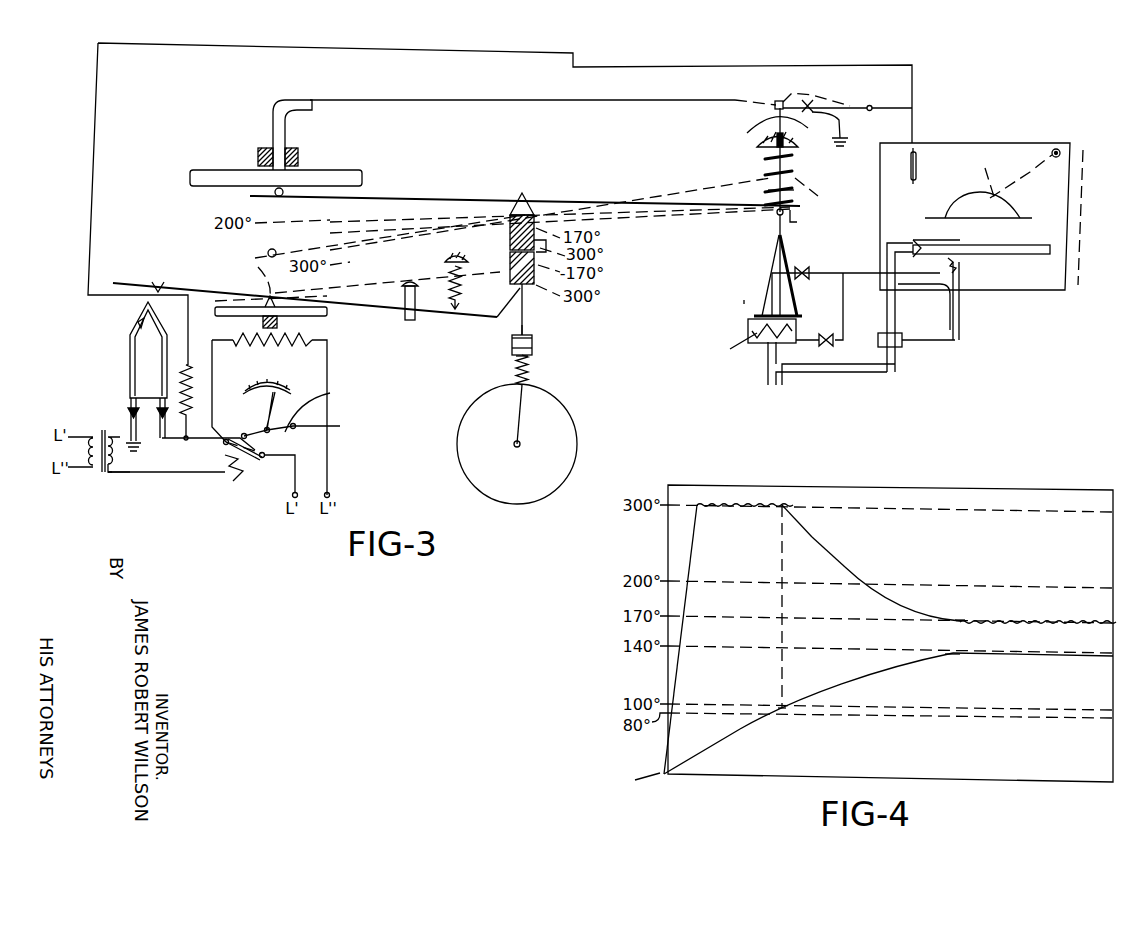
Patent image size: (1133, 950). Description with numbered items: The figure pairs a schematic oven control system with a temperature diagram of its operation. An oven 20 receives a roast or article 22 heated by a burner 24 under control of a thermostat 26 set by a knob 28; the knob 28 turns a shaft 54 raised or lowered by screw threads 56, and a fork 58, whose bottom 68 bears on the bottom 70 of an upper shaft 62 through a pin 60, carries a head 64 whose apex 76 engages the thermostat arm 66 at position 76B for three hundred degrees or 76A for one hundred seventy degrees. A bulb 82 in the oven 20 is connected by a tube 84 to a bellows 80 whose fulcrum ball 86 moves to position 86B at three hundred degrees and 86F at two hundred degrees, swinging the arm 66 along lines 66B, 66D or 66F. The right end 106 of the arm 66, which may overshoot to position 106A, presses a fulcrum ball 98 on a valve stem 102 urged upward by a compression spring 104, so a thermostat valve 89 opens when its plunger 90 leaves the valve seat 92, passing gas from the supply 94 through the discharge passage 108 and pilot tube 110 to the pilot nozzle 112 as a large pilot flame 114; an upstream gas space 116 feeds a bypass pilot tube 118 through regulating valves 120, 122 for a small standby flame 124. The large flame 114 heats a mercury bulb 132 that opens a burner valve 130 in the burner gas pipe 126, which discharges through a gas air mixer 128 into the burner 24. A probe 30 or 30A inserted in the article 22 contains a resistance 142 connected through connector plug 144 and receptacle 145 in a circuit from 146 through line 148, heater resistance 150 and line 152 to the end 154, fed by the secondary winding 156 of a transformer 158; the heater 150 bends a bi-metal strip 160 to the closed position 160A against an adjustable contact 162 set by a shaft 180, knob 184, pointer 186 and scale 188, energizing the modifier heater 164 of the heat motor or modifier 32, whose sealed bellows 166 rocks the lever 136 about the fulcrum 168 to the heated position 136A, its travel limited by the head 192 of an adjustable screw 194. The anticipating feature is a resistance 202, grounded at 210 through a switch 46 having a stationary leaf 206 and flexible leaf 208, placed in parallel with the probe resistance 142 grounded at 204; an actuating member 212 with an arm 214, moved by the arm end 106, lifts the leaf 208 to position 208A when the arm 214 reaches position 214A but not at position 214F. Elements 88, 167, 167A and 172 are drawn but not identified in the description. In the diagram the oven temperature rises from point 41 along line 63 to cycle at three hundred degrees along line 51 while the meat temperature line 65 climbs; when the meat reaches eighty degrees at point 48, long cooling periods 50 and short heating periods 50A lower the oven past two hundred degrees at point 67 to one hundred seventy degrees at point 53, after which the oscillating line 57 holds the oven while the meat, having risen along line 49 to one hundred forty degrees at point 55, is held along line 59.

In FIG. 3, the oven 20 is at (1005, 146).
In FIG. 3, the article 22 is at (1017, 215).
In FIG. 3, the burner 24 is at (1004, 254).
In FIG. 3, the thermostat 26 is at (225, 142).
In FIG. 3, the thermostatic knob 28 is at (572, 420).
In FIG. 3, the probe 30 is at (982, 184).
In FIG. 3, the probe 30A is at (130, 355).
In FIG. 3, the modifier 32 is at (336, 353).
In FIG. 4, the initial temperature point 41 is at (634, 783).
In FIG. 3, the switch 46 is at (841, 122).
In FIG. 4, the eighty degree point 48 is at (782, 708).
In FIG. 4, the meat temperature rise line 49 is at (808, 698).
In FIG. 4, the cooling periods 50 is at (806, 524).
In FIG. 4, the heating period 50A is at (820, 542).
In FIG. 4, the three hundred degree oscillating line 51 is at (734, 508).
In FIG. 4, the one hundred seventy degree point 53 is at (962, 620).
In FIG. 3, the shaft 54 is at (528, 384).
In FIG. 4, the one hundred forty degree point 55 is at (955, 657).
In FIG. 3, the screw thread construction 56 is at (530, 370).
In FIG. 4, the one hundred seventy degree oscillating line 57 is at (1030, 621).
In FIG. 3, the fork 58 is at (533, 344).
In FIG. 4, the meat holding line 59 is at (1042, 657).
In FIG. 3, the pin 60 is at (512, 338).
In FIG. 3, the upper shaft 62 is at (536, 326).
In FIG. 4, the oven heating line 63 is at (683, 640).
In FIG. 3, the thermostat arm engaging head 64 is at (535, 212).
In FIG. 4, the meat temperature line 65 is at (702, 775).
In FIG. 3, the thermostat arm 66 is at (390, 197).
In FIG. 3, the arm position 66B is at (387, 278).
In FIG. 3, the arm position 66D is at (420, 228).
In FIG. 3, the arm position 66F is at (370, 225).
In FIG. 4, the two hundred degree point 67 is at (902, 594).
In FIG. 3, the fork bottom 68 is at (517, 358).
In FIG. 3, the upper shaft bottom 70 is at (512, 348).
In FIG. 3, the apex 76 is at (525, 205).
In FIG. 3, the apex position 76A is at (518, 203).
In FIG. 3, the apex position 76B is at (512, 244).
In FIG. 3, the bellows 80 is at (332, 178).
In FIG. 3, the bulb 82 is at (917, 166).
In FIG. 3, the tube 84 is at (463, 103).
In FIG. 3, the fulcrum ball 86 is at (284, 190).
In FIG. 3, the fulcrum ball position 86B is at (266, 251).
In FIG. 3, the fulcrum ball position 86F is at (272, 222).
In FIG. 3, the spring 88 is at (768, 190).
In FIG. 3, the thermostat valve 89 is at (727, 286).
In FIG. 3, the valve plunger 90 is at (748, 328).
In FIG. 3, the valve seat 92 is at (756, 312).
In FIG. 3, the supply 94 is at (778, 380).
In FIG. 3, the fulcrum ball 98 is at (776, 214).
In FIG. 3, the valve stem 102 is at (778, 236).
In FIG. 3, the compression spring 104 is at (729, 348).
In FIG. 3, the arm right end 106 is at (810, 219).
In FIG. 3, the overshoot position 106A is at (824, 190).
In FIG. 3, the discharge passage 108 is at (772, 300).
In FIG. 3, the pilot tube 110 is at (786, 268).
In FIG. 3, the pilot nozzle 112 is at (948, 280).
In FIG. 3, the large pilot flame 114 is at (958, 256).
In FIG. 3, the upstream gas space 116 is at (792, 340).
In FIG. 3, the bypass pilot tube 118 is at (846, 320).
In FIG. 3, the regulating valve 120 is at (812, 272).
In FIG. 3, the regulating valve 122 is at (834, 342).
In FIG. 3, the small standby flame 124 is at (950, 264).
In FIG. 3, the burner gas pipe 126 is at (870, 374).
In FIG. 3, the gas air mixer 128 is at (912, 243).
In FIG. 3, the burner valve 130 is at (904, 346).
In FIG. 3, the mercury bulb 132 is at (960, 272).
In FIG. 3, the heat motor lever 136 is at (345, 302).
In FIG. 3, the heated lever position 136A is at (360, 272).
In FIG. 3, the probe resistance 142 is at (138, 322).
In FIG. 3, the connector plug 144 is at (133, 405).
In FIG. 3, the connector receptacle 145 is at (1062, 150).
In FIG. 3, the circuit start 146 is at (104, 431).
In FIG. 3, the line 148 is at (178, 440).
In FIG. 3, the heater resistance 150 is at (224, 458).
In FIG. 3, the line 152 is at (200, 474).
In FIG. 3, the circuit end 154 is at (109, 470).
In FIG. 3, the secondary winding 156 is at (116, 473).
In FIG. 3, the transformer 158 is at (94, 437).
In FIG. 3, the bi-metal strip 160 is at (246, 470).
In FIG. 3, the closed contact position 160A is at (270, 440).
In FIG. 3, the adjustable contact 162 is at (264, 460).
In FIG. 3, the modifier heater 164 is at (278, 347).
In FIG. 3, the sealed bellows 166 is at (225, 316).
In FIG. 3, the pivot 167 is at (272, 298).
In FIG. 3, the pivot path 167A is at (245, 280).
In FIG. 3, the fulcrum 168 is at (165, 290).
In FIG. 3, the link 172 is at (522, 300).
In FIG. 3, the rotatable shaft 180 is at (321, 406).
In FIG. 3, the knob 184 is at (302, 424).
In FIG. 3, the pointer 186 is at (266, 410).
In FIG. 3, the temperature scale 188 is at (264, 384).
In FIG. 3, the screw head 192 is at (443, 280).
In FIG. 3, the adjustable screw 194 is at (416, 318).
In FIG. 3, the resistance 202 is at (199, 401).
In FIG. 3, the ground 204 is at (136, 456).
In FIG. 3, the stationary leaf 206 is at (750, 128).
In FIG. 3, the flexible leaf 208 is at (850, 106).
In FIG. 3, the raised leaf position 208A is at (812, 97).
In FIG. 3, the ground 210 is at (844, 150).
In FIG. 3, the actuating member 212 is at (758, 146).
In FIG. 3, the arm 214 is at (796, 150).
In FIG. 3, the arm position 214A is at (781, 89).
In FIG. 3, the arm position 214F is at (776, 106).